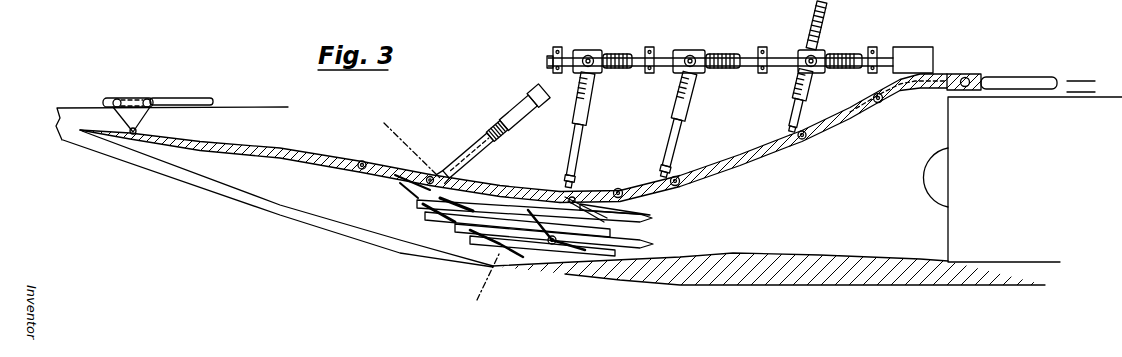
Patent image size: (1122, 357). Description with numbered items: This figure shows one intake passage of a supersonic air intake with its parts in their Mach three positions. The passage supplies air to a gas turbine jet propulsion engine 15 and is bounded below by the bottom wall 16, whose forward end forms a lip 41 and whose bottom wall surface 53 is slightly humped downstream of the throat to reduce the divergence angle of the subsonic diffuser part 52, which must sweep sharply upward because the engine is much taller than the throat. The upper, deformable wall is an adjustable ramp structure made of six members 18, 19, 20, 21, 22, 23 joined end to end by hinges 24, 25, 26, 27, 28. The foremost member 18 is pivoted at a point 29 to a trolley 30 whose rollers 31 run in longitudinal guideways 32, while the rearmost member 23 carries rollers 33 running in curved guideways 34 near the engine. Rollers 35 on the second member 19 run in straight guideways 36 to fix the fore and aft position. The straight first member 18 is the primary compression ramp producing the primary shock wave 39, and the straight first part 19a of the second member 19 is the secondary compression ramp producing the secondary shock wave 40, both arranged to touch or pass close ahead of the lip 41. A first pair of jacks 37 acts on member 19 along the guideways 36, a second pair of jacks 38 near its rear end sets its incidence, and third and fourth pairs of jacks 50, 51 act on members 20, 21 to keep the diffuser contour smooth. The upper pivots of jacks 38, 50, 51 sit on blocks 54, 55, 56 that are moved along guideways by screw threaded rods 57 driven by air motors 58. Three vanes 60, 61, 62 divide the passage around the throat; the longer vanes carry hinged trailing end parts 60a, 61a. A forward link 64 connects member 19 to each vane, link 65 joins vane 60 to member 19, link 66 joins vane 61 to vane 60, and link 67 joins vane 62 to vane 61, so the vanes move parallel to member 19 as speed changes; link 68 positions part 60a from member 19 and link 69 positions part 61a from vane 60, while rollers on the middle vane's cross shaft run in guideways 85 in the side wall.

The gas turbine jet propulsion engine 15 is at (988, 177).
The bottom wall 16 is at (624, 282).
The foremost member 18 is at (248, 146).
The second member 19 is at (500, 186).
The first part of second member 19a is at (402, 182).
The ramp member 20 is at (636, 189).
The ramp member 21 is at (737, 164).
The ramp member 22 is at (857, 117).
The rearmost member 23 is at (883, 88).
The hinge 24 is at (364, 161).
The hinge 25 is at (618, 188).
The hinge 26 is at (678, 179).
The hinge 27 is at (804, 139).
The hinge 28 is at (881, 101).
The pivot point 29 is at (133, 133).
The trolley 30 is at (128, 122).
The rollers 31 is at (117, 96).
The longitudinal guideways 32 is at (178, 98).
The rollers 33 is at (968, 76).
The curved guideways 34 is at (1010, 80).
The rollers 35 is at (401, 142).
The straight guideways 36 is at (447, 162).
The first pair of jacks 37 is at (513, 122).
The second pair of jacks 38 is at (578, 118).
The primary shock wave 39 is at (203, 172).
The secondary shock wave 40 is at (400, 181).
The lip 41 is at (479, 276).
The third pair of jacks 50 is at (675, 119).
The fourth pair of jacks 51 is at (796, 110).
The subsonic diffuser part 52 is at (812, 204).
The bottom wall surface 53 is at (730, 256).
The block 54 is at (604, 53).
The block 55 is at (703, 53).
The block 56 is at (823, 55).
The screw threaded rods 57 is at (871, 48).
The air motors 58 is at (905, 52).
The vane 60 is at (443, 211).
The hinged trailing end part 60a is at (645, 219).
The vane 61 is at (470, 233).
The hinged trailing end part 61a is at (600, 247).
The third vane 62 is at (475, 261).
The forward link 64 is at (462, 185).
The link 65 is at (539, 195).
The link 66 is at (532, 256).
The link 67 is at (536, 250).
The link 68 is at (643, 211).
The link 69 is at (590, 228).
The guideways 85 is at (604, 186).